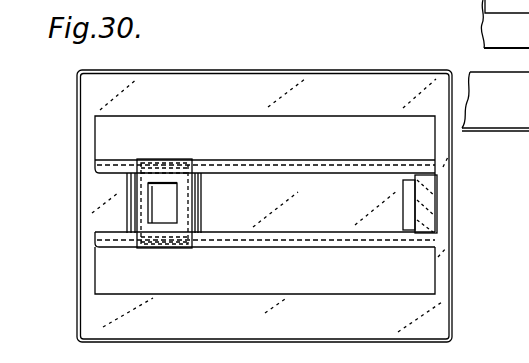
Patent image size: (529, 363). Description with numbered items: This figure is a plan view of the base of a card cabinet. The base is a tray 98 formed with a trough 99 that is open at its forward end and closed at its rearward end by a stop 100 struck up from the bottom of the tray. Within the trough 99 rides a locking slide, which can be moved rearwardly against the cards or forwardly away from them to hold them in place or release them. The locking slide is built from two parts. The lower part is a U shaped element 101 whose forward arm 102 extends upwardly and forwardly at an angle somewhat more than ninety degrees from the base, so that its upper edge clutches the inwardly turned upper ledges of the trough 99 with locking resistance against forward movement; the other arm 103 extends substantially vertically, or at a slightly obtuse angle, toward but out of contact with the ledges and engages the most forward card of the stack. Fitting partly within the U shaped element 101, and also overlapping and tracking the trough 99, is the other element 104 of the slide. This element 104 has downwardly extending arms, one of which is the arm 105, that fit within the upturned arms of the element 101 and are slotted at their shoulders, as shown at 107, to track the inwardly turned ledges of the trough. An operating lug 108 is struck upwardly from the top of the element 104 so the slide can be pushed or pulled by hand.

The tray 98 is at (305, 70).
The trough 99 is at (263, 205).
The stop 100 is at (437, 188).
The lower U shaped element 101 is at (201, 217).
The forward arm 102 is at (137, 203).
The other arm 103 is at (201, 190).
The other element of the locking slide 104 is at (157, 252).
The downwardly extending arm 105 is at (134, 217).
The slots 107 is at (134, 166).
The operating lug 108 is at (152, 203).